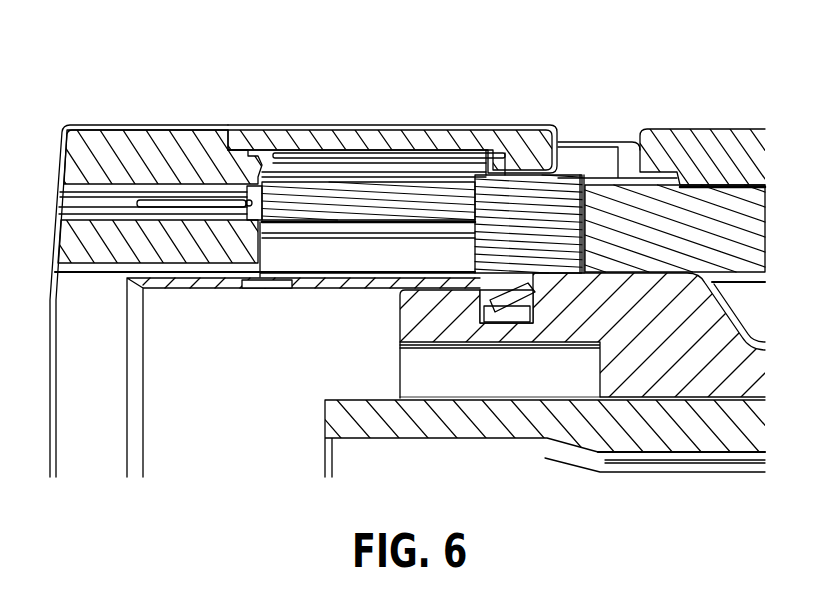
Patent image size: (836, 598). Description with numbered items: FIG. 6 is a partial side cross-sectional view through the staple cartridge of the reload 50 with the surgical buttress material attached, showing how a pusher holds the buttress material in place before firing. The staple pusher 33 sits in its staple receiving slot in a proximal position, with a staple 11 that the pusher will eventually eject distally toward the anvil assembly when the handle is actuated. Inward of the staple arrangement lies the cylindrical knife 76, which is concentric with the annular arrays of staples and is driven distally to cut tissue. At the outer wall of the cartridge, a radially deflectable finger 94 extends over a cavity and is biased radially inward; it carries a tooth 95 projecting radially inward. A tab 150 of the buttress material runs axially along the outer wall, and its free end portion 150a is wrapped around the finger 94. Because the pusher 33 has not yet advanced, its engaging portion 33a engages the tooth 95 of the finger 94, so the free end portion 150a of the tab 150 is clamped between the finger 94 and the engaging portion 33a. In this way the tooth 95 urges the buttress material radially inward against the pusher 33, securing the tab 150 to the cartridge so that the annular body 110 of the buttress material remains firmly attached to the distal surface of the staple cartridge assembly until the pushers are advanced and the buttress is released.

The annular body 110 is at (60, 157).
The staple 11 is at (204, 203).
The tab 150 is at (303, 123).
The free end portion 150a is at (485, 165).
The tooth 95 is at (505, 160).
The finger 94 is at (520, 150).
The staple pusher 33 is at (373, 170).
The engaging portion 33a is at (565, 168).
The reload 50 is at (598, 102).
The cylindrical knife 76 is at (155, 460).